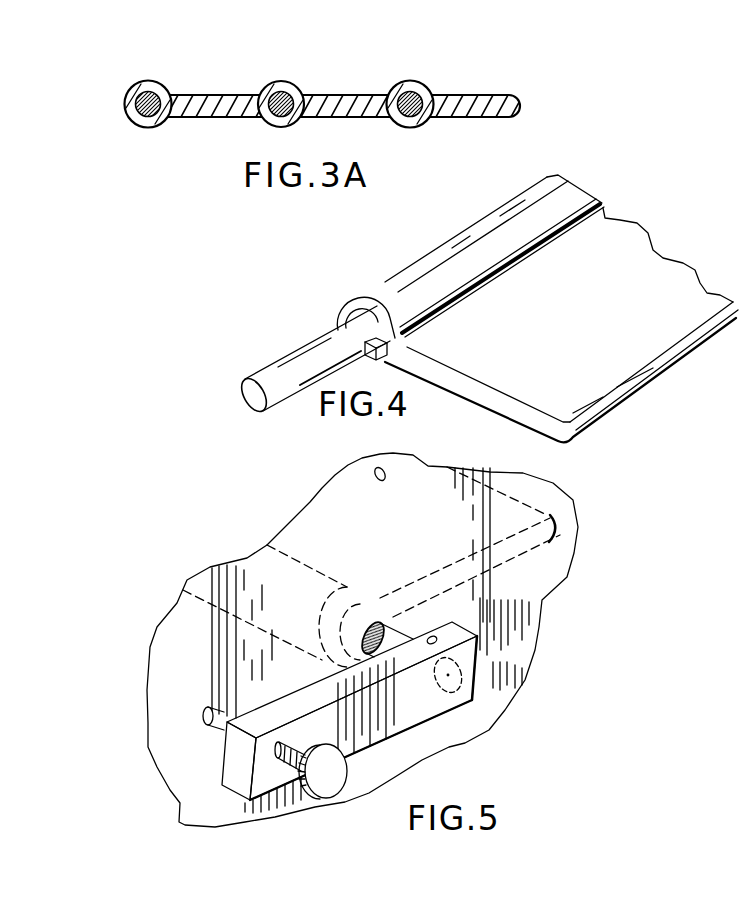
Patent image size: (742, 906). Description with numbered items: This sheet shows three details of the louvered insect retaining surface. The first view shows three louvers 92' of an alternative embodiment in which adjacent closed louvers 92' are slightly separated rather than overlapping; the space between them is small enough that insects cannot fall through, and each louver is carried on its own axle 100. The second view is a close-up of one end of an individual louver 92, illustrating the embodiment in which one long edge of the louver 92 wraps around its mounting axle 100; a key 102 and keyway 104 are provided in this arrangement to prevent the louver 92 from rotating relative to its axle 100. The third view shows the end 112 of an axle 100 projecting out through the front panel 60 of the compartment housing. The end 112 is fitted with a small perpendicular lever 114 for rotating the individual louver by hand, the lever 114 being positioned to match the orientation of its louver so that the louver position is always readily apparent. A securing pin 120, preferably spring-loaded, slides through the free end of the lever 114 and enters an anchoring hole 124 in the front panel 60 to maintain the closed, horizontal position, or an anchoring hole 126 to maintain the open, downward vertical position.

In FIG. 3A, the louver 92' is at (366, 73).
In FIG. 3A, the axle 100 is at (407, 85).
In FIG. 4, the axle 100 is at (303, 345).
In FIG. 5, the axle 100 is at (400, 630).
In FIG. 4, the louver 92 is at (561, 308).
In FIG. 4, the key 102 is at (391, 302).
In FIG. 4, the keyway 104 is at (405, 348).
In FIG. 4, the end of axle 112 is at (254, 379).
In FIG. 5, the end of axle 112 is at (463, 668).
In FIG. 5, the front panel 60 is at (193, 613).
In FIG. 5, the anchoring hole 126 is at (377, 477).
In FIG. 5, the lever 114 is at (420, 717).
In FIG. 5, the securing pin 120 is at (294, 777).
In FIG. 5, the anchoring hole 124 is at (205, 716).